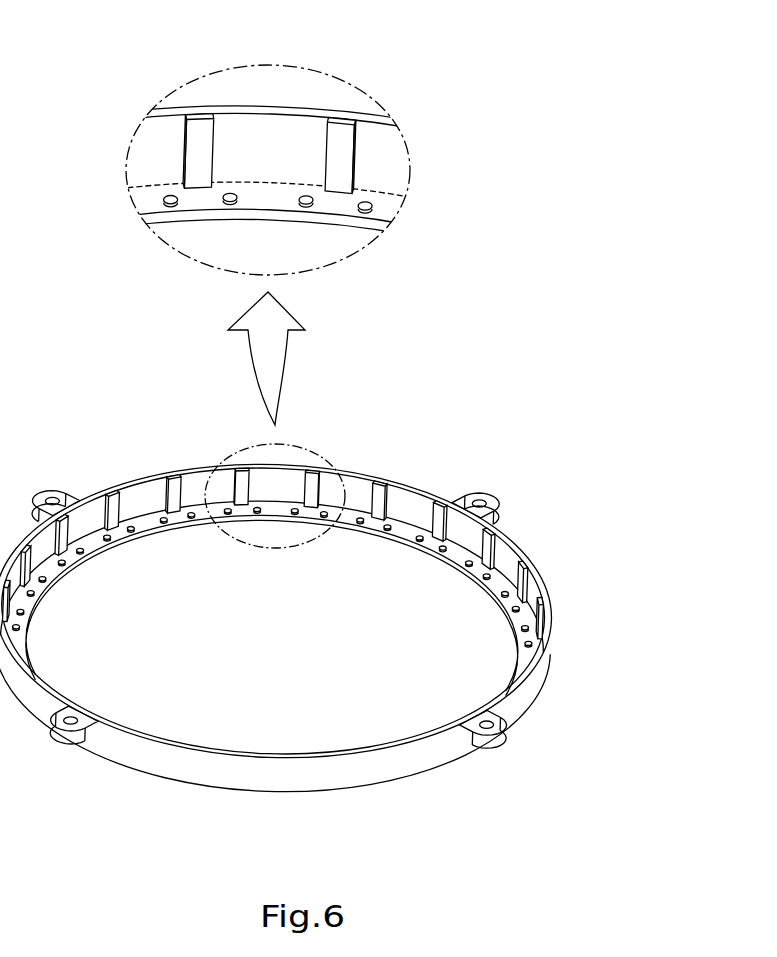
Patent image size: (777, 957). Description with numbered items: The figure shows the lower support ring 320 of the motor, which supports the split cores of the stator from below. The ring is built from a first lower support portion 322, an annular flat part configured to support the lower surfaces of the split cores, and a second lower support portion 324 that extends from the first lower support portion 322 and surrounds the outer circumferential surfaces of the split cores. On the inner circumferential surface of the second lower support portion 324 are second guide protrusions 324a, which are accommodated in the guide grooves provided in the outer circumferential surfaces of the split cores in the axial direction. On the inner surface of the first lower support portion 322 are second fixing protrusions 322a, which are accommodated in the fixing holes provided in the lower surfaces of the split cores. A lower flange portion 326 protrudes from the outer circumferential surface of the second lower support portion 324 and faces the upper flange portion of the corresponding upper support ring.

The lower support ring 320 is at (325, 407).
The first lower support portion 322 is at (272, 444).
The second fixing protrusions 322a is at (367, 193).
The second lower support portion 324 is at (283, 331).
The second guide protrusions 324a is at (200, 137).
The lower flange portion 326 is at (503, 718).